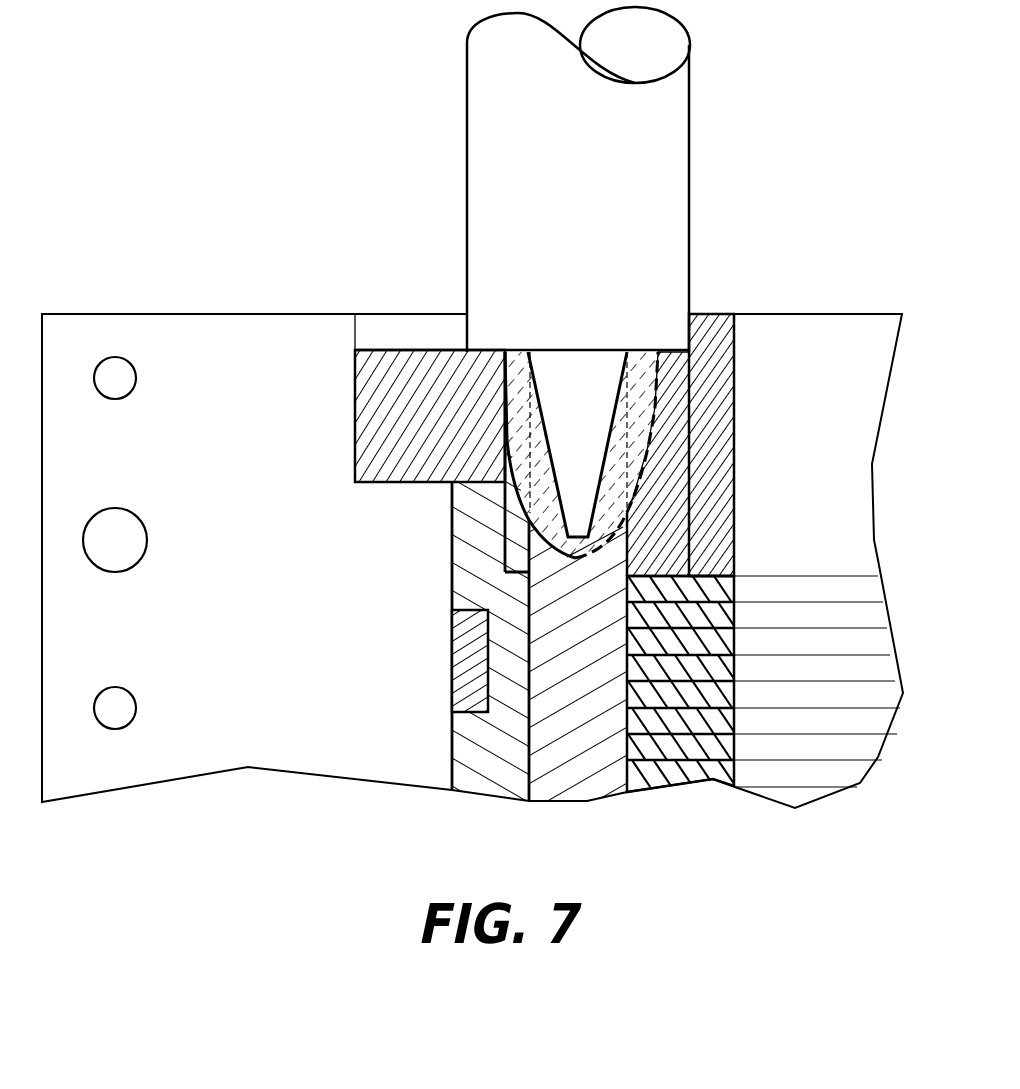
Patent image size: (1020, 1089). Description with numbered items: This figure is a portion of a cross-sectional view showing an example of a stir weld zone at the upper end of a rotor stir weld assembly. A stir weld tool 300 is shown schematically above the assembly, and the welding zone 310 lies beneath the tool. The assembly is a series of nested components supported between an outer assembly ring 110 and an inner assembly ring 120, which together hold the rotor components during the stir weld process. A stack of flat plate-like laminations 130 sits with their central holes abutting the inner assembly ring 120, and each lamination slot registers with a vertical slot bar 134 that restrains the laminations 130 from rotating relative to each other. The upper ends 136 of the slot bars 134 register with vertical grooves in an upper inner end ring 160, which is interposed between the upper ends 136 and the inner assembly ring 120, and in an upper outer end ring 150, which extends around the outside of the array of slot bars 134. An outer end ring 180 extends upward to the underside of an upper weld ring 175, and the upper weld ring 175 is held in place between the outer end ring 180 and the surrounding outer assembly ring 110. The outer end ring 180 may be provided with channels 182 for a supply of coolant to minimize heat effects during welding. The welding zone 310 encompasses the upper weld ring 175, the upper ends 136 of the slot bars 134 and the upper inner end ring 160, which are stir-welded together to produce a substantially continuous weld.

The outer assembly ring 110 is at (292, 631).
The inner assembly ring 120 is at (735, 452).
The laminations 130 is at (673, 748).
The slot bar 134 is at (577, 738).
The upper ends of the slot bars 136 is at (597, 580).
The upper outer end ring 150 is at (527, 507).
The upper inner end ring 160 is at (670, 407).
The upper weld ring 175 is at (352, 420).
The outer end ring 180 is at (452, 558).
The channels 182 is at (452, 660).
The stir weld tool 300 is at (689, 207).
The welding zone 310 is at (662, 455).